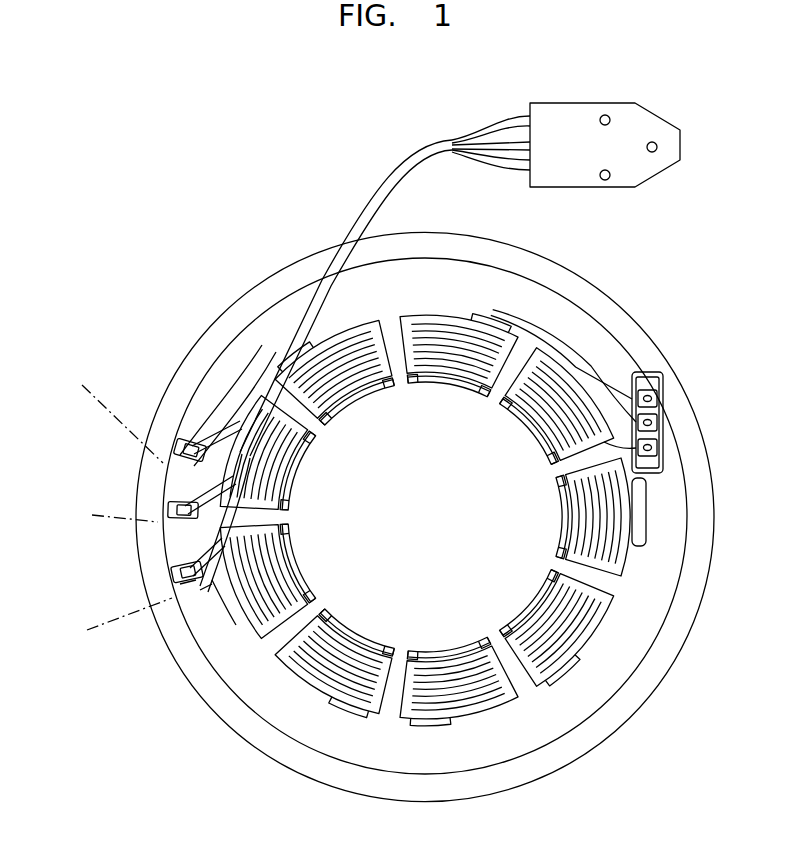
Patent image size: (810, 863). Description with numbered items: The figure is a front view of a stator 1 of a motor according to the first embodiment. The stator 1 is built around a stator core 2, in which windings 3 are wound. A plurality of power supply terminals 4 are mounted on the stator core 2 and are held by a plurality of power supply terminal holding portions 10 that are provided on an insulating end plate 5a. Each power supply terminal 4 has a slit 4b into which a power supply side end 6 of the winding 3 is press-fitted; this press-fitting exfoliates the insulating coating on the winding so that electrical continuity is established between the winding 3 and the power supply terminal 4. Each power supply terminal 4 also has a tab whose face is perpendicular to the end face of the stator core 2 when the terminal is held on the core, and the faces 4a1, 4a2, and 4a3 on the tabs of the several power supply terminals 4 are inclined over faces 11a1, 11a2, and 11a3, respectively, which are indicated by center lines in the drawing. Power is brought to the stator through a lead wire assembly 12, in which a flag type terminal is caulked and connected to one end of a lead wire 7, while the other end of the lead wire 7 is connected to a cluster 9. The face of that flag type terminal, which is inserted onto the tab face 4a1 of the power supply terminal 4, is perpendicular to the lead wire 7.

The stator 1 is at (660, 352).
The stator core 2 is at (575, 285).
The windings 3 is at (500, 323).
The power supply terminal 4 is at (135, 507).
The face of tab 4a1 is at (176, 580).
The face of tab 4a2 is at (168, 504).
The face of tab 4a3 is at (172, 440).
The slit 4b is at (196, 598).
The insulating end plate 5a is at (338, 740).
The power supply side end 6 is at (234, 630).
The lead wire 7 is at (356, 220).
The cluster 9 is at (637, 130).
The power supply terminal holding portion 10 is at (206, 598).
The face 11a1 is at (100, 619).
The face 11a2 is at (93, 507).
The face 11a3 is at (101, 407).
The lead wire assembly 12 is at (370, 193).